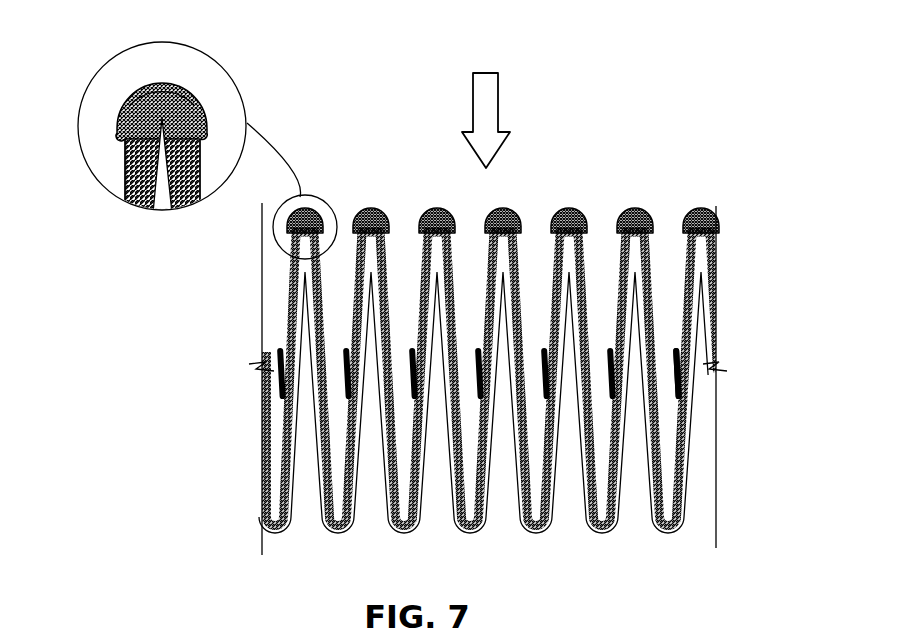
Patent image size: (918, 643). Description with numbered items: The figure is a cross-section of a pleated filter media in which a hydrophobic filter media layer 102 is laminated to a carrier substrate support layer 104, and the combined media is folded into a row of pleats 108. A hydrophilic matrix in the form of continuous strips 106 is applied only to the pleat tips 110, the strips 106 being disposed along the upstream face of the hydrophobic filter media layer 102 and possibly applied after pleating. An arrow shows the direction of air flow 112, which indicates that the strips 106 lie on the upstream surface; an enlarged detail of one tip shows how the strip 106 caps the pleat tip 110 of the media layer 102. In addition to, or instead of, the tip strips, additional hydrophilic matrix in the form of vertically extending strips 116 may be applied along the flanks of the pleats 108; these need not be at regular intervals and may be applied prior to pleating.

The hydrophobic filter media layer 102 is at (126, 166).
The carrier substrate support layer 104 is at (670, 538).
The hydrophilic matrix continuous strips 106 is at (190, 90).
The pleats 108 is at (687, 412).
The pleat tips 110 is at (142, 83).
The direction of air flow 112 is at (498, 88).
The vertically extending hydrophilic strips 116 is at (672, 350).